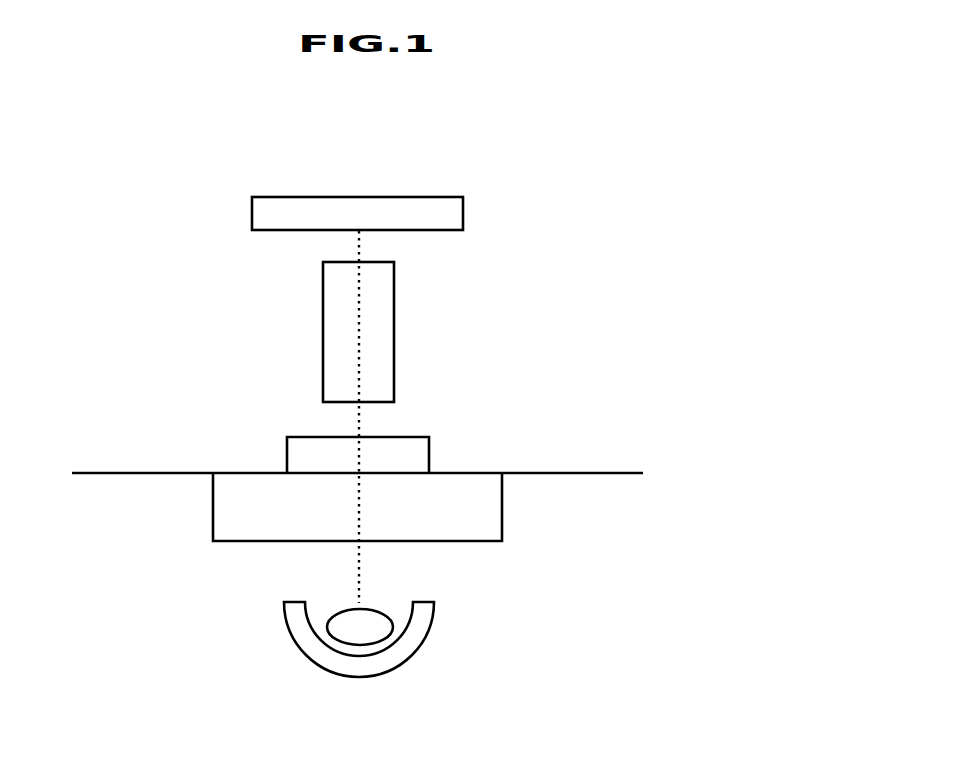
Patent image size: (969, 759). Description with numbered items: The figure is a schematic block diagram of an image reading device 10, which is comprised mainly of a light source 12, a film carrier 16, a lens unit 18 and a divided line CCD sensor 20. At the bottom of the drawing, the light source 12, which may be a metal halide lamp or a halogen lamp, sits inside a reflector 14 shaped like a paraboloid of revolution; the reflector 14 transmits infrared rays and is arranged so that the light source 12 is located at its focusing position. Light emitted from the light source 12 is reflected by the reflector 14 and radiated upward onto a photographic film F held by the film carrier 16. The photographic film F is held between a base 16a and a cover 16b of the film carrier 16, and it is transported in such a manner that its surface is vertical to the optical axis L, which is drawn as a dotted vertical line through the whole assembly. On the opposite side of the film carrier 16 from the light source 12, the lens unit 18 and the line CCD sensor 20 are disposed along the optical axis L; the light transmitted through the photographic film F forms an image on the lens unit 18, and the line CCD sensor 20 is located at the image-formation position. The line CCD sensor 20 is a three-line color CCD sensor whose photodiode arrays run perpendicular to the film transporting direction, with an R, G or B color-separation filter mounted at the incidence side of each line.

The image reading device 10 is at (556, 217).
The light source 12 is at (384, 622).
The reflector 14 is at (405, 653).
The film carrier 16 is at (442, 451).
The base 16a is at (482, 518).
The cover 16b is at (305, 455).
The lens unit 18 is at (375, 321).
The line CCD sensor 20 is at (372, 207).
The photographic film F is at (583, 473).
The optical axis L is at (359, 548).